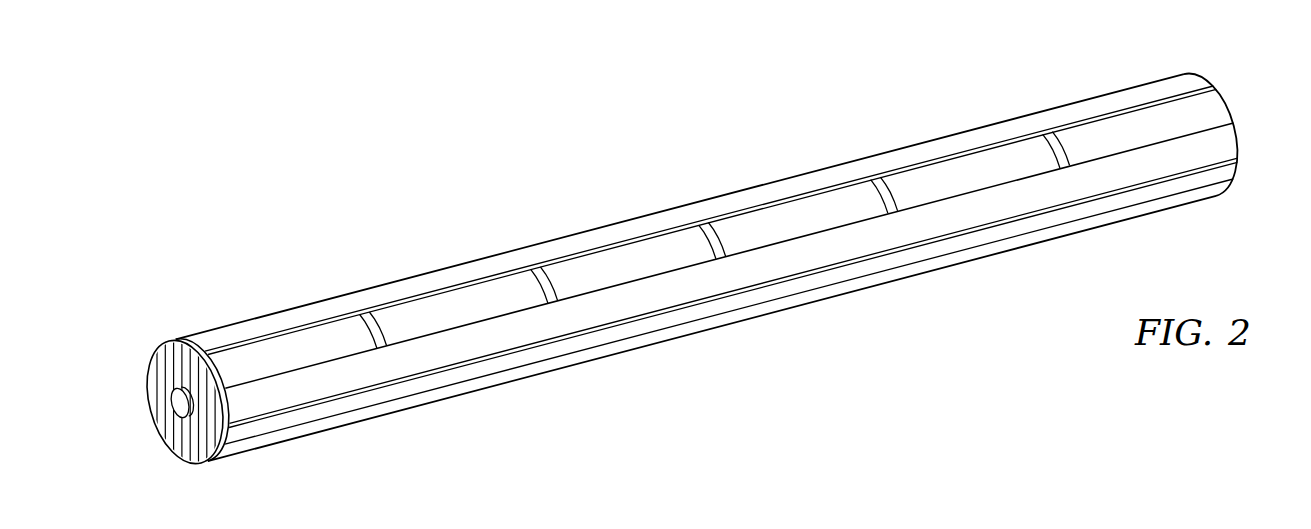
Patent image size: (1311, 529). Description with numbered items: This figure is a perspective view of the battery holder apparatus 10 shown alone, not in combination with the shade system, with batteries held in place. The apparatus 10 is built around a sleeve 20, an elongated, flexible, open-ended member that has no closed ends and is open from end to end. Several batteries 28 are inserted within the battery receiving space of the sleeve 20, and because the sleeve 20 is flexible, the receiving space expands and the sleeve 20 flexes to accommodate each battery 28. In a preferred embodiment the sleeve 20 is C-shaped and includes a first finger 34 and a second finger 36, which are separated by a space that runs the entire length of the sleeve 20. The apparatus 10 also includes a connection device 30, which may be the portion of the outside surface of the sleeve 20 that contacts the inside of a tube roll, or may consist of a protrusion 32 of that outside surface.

The battery holder apparatus 10 is at (298, 131).
The sleeve 20 is at (363, 288).
The battery 28 is at (780, 213).
The connection device 30 is at (710, 302).
The protrusion 32 is at (567, 348).
The first finger 34 is at (453, 273).
The second finger 36 is at (383, 373).